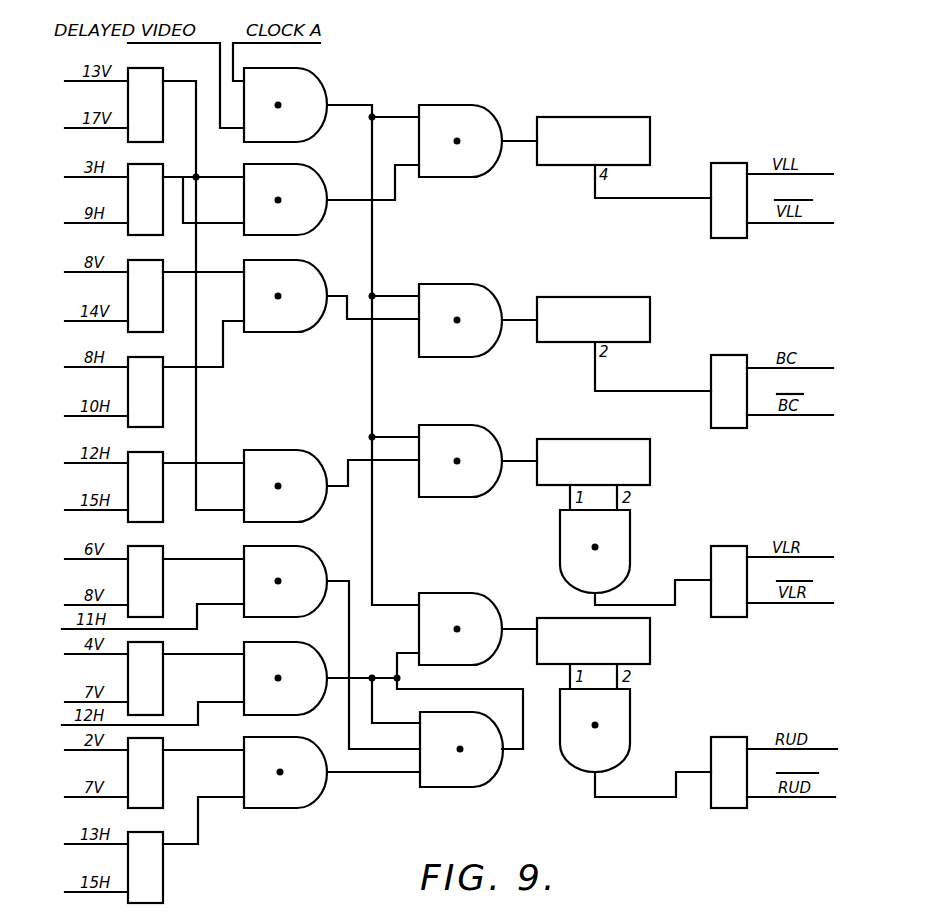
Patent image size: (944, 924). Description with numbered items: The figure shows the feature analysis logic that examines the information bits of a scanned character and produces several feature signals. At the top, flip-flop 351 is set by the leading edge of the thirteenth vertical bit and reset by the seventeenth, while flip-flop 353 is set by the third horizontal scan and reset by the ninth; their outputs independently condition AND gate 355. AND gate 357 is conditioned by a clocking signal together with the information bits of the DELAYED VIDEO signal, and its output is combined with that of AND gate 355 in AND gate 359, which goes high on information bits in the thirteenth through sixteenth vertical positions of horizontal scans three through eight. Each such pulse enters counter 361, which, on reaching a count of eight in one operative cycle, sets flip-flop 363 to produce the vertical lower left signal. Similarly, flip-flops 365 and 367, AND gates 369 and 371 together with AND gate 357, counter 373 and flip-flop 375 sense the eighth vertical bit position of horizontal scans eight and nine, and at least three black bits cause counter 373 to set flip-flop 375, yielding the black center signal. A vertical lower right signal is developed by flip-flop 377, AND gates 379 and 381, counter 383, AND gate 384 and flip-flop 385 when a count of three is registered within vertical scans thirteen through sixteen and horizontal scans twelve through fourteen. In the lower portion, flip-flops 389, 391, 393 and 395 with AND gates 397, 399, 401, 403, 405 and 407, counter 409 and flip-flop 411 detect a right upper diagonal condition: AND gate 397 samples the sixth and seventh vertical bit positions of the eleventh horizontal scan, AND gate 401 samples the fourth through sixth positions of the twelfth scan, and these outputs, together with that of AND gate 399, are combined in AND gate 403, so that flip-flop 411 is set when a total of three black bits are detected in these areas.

The flip-flop 351 is at (163, 70).
The flip-flop 353 is at (163, 170).
The flip-flop 365 is at (163, 266).
The flip-flop 367 is at (163, 362).
The flip-flop 377 is at (163, 458).
The flip-flop 389 is at (163, 552).
The flip-flop 391 is at (165, 678).
The flip-flop 393 is at (165, 780).
The flip-flop 395 is at (165, 875).
The AND gate 357 is at (322, 80).
The AND gate 355 is at (323, 178).
The AND gate 369 is at (322, 272).
The AND gate 379 is at (300, 450).
The AND gate 397 is at (322, 560).
The AND gate 399 is at (329, 640).
The AND gate 401 is at (320, 795).
The AND gate 359 is at (470, 96).
The AND gate 371 is at (475, 283).
The AND gate 381 is at (455, 425).
The AND gate 405 is at (488, 577).
The AND gate 403 is at (485, 782).
The counter 361 is at (630, 117).
The counter 373 is at (620, 297).
The counter 383 is at (650, 478).
The counter 409 is at (650, 652).
The AND gate 384 is at (632, 558).
The AND gate 407 is at (632, 722).
The flip-flop 363 is at (735, 163).
The flip-flop 375 is at (737, 355).
The flip-flop 385 is at (747, 617).
The flip-flop 411 is at (745, 808).